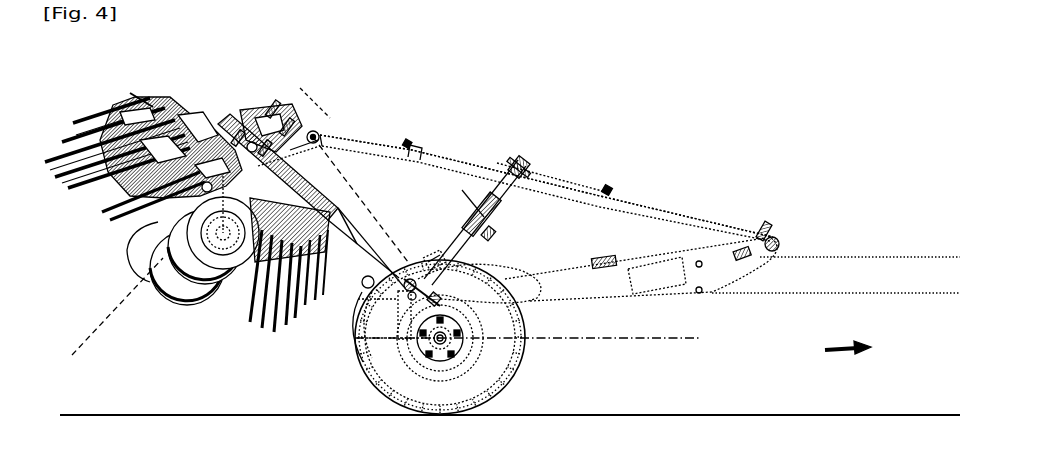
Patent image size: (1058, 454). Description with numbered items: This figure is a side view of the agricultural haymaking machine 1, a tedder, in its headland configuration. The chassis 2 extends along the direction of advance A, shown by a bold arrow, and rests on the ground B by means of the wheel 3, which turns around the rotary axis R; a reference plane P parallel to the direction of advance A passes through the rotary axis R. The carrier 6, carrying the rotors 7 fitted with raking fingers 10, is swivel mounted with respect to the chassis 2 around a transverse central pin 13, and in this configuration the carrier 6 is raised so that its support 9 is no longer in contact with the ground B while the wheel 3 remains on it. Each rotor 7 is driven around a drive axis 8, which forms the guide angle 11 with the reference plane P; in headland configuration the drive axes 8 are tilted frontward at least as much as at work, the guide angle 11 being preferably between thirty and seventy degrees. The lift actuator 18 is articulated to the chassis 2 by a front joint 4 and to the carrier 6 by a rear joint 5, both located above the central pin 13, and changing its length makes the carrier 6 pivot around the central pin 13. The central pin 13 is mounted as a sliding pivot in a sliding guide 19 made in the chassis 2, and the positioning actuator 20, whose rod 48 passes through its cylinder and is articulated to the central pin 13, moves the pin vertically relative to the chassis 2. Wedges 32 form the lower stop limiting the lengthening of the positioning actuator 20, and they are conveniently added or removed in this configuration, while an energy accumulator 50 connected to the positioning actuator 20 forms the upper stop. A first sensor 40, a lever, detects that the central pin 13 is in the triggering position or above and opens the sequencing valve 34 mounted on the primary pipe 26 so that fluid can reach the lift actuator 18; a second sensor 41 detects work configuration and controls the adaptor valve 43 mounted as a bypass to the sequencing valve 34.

The agricultural haymaking machine 1 is at (884, 130).
The chassis 2 is at (836, 275).
The wheel 3 is at (515, 365).
The front joint 4 is at (777, 238).
The rear joint 5 is at (314, 131).
The carrier 6 is at (176, 88).
The rotor 7 is at (143, 100).
The drive axis 8 is at (300, 90).
The support 9 is at (235, 258).
The raking finger 10 is at (286, 310).
The guide angle 11 is at (369, 150).
The central pin 13 is at (357, 330).
The lift actuator 18 is at (401, 140).
The sliding guide 19 is at (438, 340).
The positioning actuator 20 is at (442, 258).
The primary pipe 26 is at (412, 143).
The wedges 32 is at (475, 212).
The sequencing valve 34 is at (512, 307).
The first sensor 40 is at (444, 283).
The second sensor 41 is at (494, 165).
The adaptor valve 43 is at (526, 166).
The rod 48 is at (505, 191).
The energy accumulator 50 is at (497, 236).
The direction of advance A is at (824, 351).
The ground B is at (896, 412).
The reference plane P is at (585, 340).
The rotary axis R is at (455, 350).